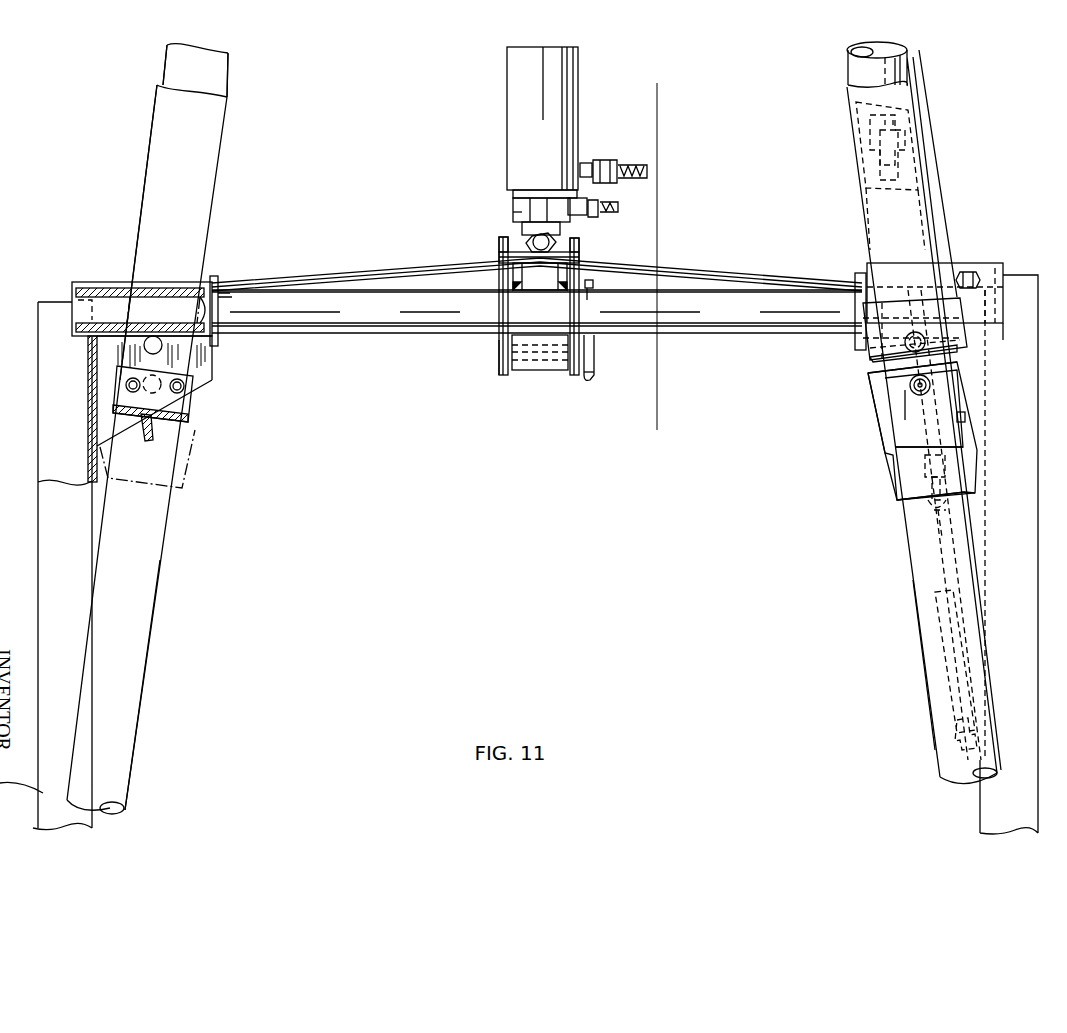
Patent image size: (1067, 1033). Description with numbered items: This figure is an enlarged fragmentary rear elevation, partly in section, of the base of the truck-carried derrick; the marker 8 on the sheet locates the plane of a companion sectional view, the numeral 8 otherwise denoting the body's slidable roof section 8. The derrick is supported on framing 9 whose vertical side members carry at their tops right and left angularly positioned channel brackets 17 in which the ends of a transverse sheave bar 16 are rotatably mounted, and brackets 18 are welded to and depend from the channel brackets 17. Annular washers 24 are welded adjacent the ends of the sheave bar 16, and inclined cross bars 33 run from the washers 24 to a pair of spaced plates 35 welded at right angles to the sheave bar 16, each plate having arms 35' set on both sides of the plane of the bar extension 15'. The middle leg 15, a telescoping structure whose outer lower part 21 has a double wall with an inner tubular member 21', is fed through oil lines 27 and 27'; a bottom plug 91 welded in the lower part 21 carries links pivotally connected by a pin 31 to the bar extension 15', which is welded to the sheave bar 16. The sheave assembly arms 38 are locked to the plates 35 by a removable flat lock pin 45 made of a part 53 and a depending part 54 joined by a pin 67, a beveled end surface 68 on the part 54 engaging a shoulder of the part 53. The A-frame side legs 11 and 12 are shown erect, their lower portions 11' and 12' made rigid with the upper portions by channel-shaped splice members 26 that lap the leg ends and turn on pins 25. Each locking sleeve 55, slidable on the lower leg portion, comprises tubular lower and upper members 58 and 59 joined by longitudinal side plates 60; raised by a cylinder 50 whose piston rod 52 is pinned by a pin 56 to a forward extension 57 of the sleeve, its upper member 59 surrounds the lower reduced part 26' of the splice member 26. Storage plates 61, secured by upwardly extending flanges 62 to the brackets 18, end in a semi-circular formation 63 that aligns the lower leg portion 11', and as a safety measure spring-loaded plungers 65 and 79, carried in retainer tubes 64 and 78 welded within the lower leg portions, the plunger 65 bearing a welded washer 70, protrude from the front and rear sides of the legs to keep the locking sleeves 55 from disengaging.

The slidable roof section 8 is at (657, 83).
The framing 9 is at (995, 556).
The right A-frame side leg 11 is at (922, 417).
The lower portion of right side leg 11' is at (907, 665).
The left A-frame side leg 12 is at (147, 429).
The lower portion of left side leg 12' is at (159, 685).
The middle leg 15 is at (508, 118).
The bar extension 15' is at (505, 245).
The sheave bar 16 is at (358, 333).
The channel brackets 17 is at (93, 280).
The brackets 18 is at (212, 368).
The outer lower part of middle leg 21 is at (507, 180).
The inner member 21' is at (608, 199).
The annular washers 24 is at (214, 280).
The pins 25 is at (912, 147).
The splice members 26 is at (560, 410).
The lower reduced part of splice member 26' is at (894, 369).
The oil line 27 is at (651, 215).
The oil line 27' is at (654, 162).
The pin 31 is at (548, 241).
The inclined cross bar 33 is at (373, 264).
The sheave bar plates 35 is at (527, 335).
The arms of plates 35' is at (538, 249).
The sheave assembly arms 38 is at (540, 378).
The lock pin 45 is at (597, 357).
The cylinder 50 is at (952, 662).
The piston rod 52 is at (940, 540).
The lock pin part 53 is at (562, 286).
The depending lock pin part 54 is at (590, 380).
The locking sleeve 55 is at (197, 437).
The pin 56 is at (905, 490).
The forward extension 57 is at (958, 455).
The tubular lower member 58 is at (900, 484).
The tubular upper member 59 is at (880, 322).
The longitudinal side plates 60 is at (968, 390).
The storage plate 61 is at (150, 445).
The upwardly-extending flange 62 is at (183, 406).
The semi-circular formation 63 is at (960, 415).
The retainer tube 64 is at (905, 390).
The plunger 65 is at (925, 388).
The pin 67 is at (587, 292).
The beveled end surface 68 is at (590, 287).
The washer 70 is at (880, 378).
The retainer tube 78 is at (918, 340).
The plunger 79 is at (872, 356).
The bottom plug 91 is at (523, 214).